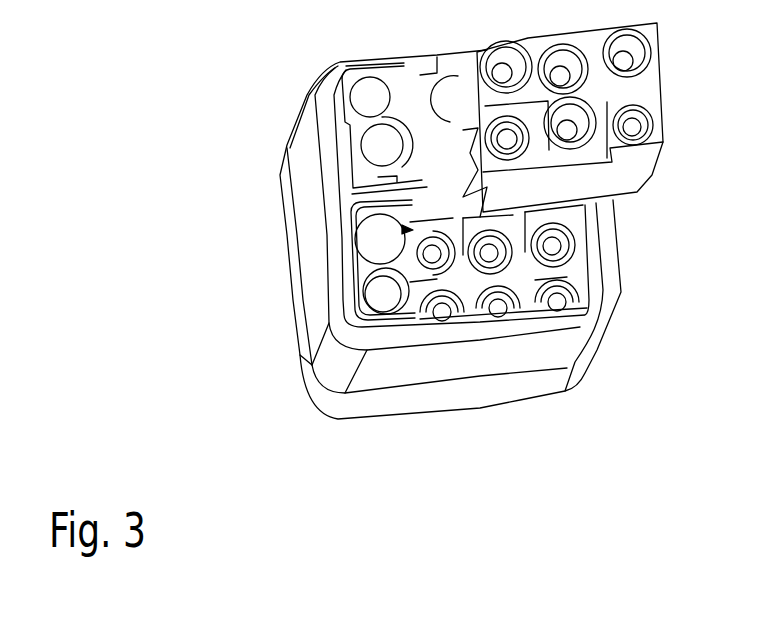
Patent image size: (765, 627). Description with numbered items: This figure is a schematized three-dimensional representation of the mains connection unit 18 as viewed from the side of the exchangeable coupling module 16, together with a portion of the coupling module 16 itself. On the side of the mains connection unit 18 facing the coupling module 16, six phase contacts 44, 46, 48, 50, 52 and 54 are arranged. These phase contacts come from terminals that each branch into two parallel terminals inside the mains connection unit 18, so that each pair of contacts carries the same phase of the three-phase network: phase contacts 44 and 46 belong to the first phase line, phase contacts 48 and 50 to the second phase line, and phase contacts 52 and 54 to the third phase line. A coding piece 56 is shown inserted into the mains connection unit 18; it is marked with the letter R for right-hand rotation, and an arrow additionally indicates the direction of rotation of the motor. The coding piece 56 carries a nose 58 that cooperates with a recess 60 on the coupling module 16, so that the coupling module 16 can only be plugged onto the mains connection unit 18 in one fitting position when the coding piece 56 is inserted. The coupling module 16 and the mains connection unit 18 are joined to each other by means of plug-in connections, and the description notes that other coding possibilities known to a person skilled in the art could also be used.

The exchangeable coupling module 16 is at (613, 170).
The mains connection unit 18 is at (592, 350).
The phase contact 44 is at (557, 303).
The phase contact 46 is at (498, 310).
The phase contact 48 is at (553, 247).
The phase contact 50 is at (492, 257).
The phase contact 52 is at (428, 197).
The phase contact 54 is at (428, 197).
The coding piece 56 is at (380, 286).
The nose 58 is at (418, 200).
The recess 60 is at (474, 130).